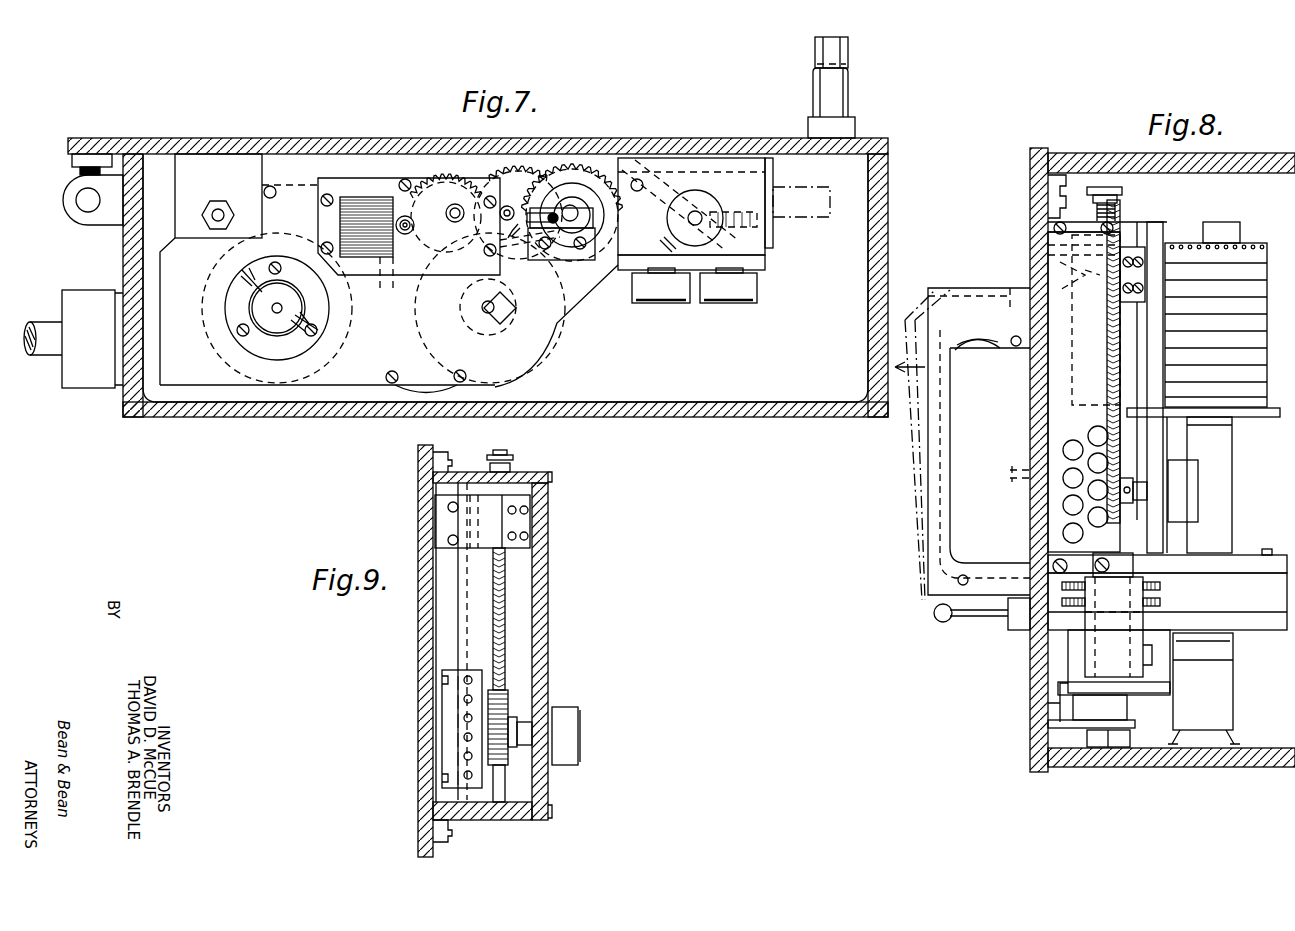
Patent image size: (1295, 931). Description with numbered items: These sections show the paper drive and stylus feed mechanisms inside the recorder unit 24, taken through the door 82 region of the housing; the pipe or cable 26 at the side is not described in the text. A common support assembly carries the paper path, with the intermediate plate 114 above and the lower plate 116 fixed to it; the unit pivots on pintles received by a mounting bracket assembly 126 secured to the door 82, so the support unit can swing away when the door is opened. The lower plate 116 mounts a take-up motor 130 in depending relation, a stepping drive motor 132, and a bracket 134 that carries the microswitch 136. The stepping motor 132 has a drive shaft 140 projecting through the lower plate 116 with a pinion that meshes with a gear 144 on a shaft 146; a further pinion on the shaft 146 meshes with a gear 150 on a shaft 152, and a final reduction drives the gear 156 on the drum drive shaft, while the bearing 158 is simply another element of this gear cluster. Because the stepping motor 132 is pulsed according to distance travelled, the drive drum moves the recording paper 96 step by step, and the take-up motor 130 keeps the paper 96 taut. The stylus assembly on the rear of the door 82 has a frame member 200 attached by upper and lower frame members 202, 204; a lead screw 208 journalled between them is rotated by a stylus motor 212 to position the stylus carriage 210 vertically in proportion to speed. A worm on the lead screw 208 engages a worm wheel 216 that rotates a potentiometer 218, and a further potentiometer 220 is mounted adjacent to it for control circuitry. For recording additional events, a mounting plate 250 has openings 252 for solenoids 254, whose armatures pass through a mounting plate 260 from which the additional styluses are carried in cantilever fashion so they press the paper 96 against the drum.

In FIG. 7, the unit 24 is at (901, 233).
In FIG. 8, the unit 24 is at (1279, 776).
In FIG. 7, the cable 26 is at (52, 348).
In FIG. 7, the door 82 is at (180, 138).
In FIG. 8, the door 82 is at (1032, 683).
In FIG. 8, the recording paper 96 is at (1258, 388).
In FIG. 8, the intermediate plate 114 is at (1245, 556).
In FIG. 7, the lower plate 116 is at (353, 378).
In FIG. 8, the lower plate 116 is at (1245, 622).
In FIG. 7, the mounting bracket assembly 126 is at (235, 160).
In FIG. 8, the mounting bracket assembly 126 is at (1055, 722).
In FIG. 7, the take-up motor 130 is at (272, 326).
In FIG. 8, the take-up motor 130 is at (1220, 700).
In FIG. 7, the stepping drive motor 132 is at (370, 265).
In FIG. 8, the stepping drive motor 132 is at (1143, 690).
In FIG. 7, the bracket 134 is at (582, 263).
In FIG. 7, the microswitch 136 is at (590, 213).
In FIG. 7, the drive shaft 140 is at (403, 217).
In FIG. 7, the gear 144 is at (455, 176).
In FIG. 7, the shaft 146 is at (452, 206).
In FIG. 7, the gear 150 is at (504, 207).
In FIG. 8, the gear 150 is at (1165, 585).
In FIG. 7, the shaft 152 is at (548, 213).
In FIG. 7, the gear 156 is at (566, 170).
In FIG. 8, the gear 156 is at (1165, 600).
In FIG. 7, the shaft 158 is at (571, 206).
In FIG. 8, the frame member 200 is at (1163, 238).
In FIG. 8, the frame member 202 is at (1135, 226).
In FIG. 8, the frame member 204 is at (1140, 565).
In FIG. 8, the lead screw 208 is at (1107, 365).
In FIG. 9, the lead screw 208 is at (503, 635).
In FIG. 8, the stylus carriage 210 is at (1120, 255).
In FIG. 9, the stylus carriage 210 is at (483, 505).
In FIG. 7, the stylus motor 212 is at (697, 193).
In FIG. 8, the stylus motor 212 is at (1092, 650).
In FIG. 8, the worm wheel 216 is at (1122, 468).
In FIG. 9, the worm wheel 216 is at (510, 715).
In FIG. 7, the potentiometer 218 is at (733, 303).
In FIG. 8, the potentiometer 218 is at (1190, 470).
In FIG. 9, the potentiometer 218 is at (566, 710).
In FIG. 7, the potentiometer 220 is at (664, 303).
In FIG. 8, the mounting plate 250 is at (1062, 424).
In FIG. 8, the openings 252 is at (1066, 500).
In FIG. 7, the solenoid 254 is at (812, 218).
In FIG. 9, the mounting plate 260 is at (445, 718).